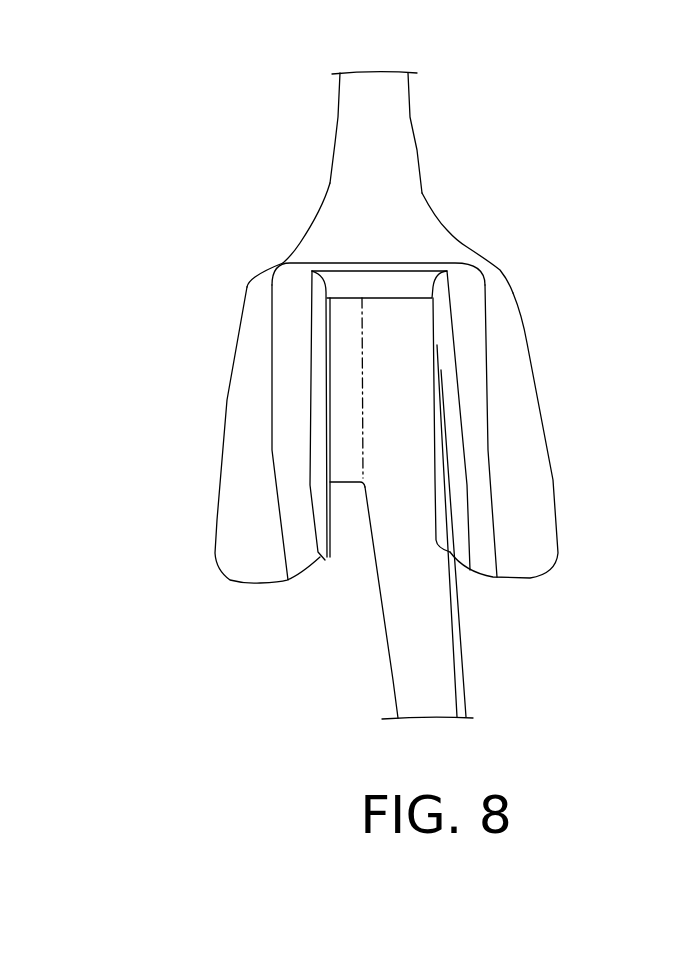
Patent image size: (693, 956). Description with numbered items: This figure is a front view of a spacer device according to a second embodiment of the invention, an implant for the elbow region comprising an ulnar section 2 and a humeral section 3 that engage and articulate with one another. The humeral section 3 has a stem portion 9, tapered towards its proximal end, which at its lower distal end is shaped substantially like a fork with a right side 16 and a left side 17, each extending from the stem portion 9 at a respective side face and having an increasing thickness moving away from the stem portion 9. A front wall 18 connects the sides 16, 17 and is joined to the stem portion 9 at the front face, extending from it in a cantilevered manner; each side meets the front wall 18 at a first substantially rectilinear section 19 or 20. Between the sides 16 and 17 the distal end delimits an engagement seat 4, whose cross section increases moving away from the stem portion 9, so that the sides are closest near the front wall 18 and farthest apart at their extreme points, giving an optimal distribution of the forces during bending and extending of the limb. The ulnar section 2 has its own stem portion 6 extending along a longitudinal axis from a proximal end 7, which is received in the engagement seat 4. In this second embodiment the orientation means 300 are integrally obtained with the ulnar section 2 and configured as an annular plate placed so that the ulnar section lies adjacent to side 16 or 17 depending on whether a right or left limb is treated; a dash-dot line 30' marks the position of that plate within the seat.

The ulnar section 2 is at (575, 618).
The humeral section 3 is at (495, 155).
The engagement seat 4 is at (351, 604).
The stem portion 6 is at (437, 647).
The proximal end 7 is at (410, 367).
The stem portion 9 is at (400, 110).
The right side 16 is at (527, 477).
The left side 17 is at (262, 495).
The front wall 18 is at (373, 250).
The first substantially rectilinear section 19 is at (467, 247).
The first substantially rectilinear section 20 is at (292, 250).
The fold line 30' is at (257, 388).
The orientation means 300 is at (347, 483).